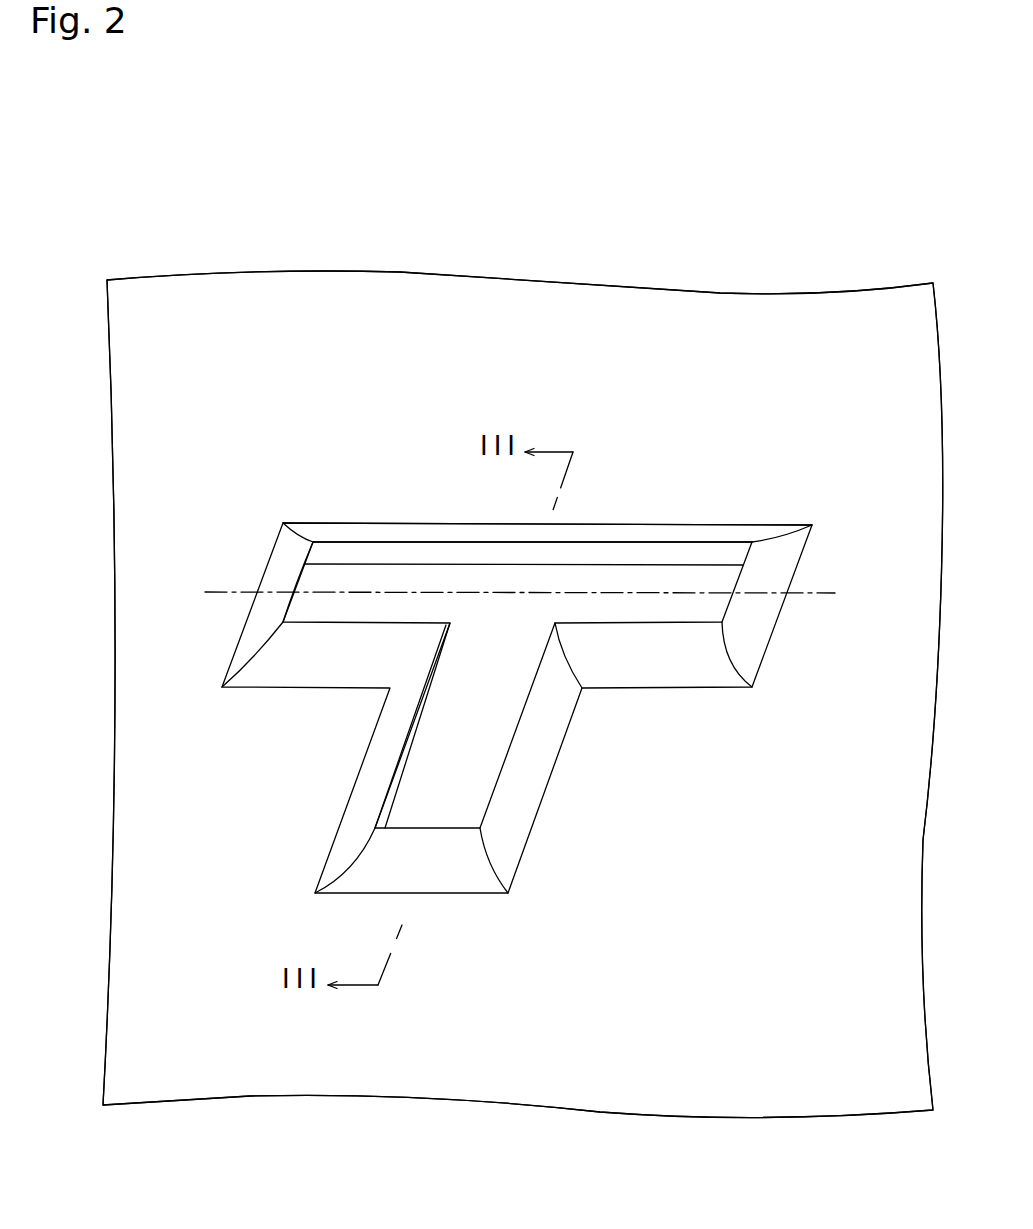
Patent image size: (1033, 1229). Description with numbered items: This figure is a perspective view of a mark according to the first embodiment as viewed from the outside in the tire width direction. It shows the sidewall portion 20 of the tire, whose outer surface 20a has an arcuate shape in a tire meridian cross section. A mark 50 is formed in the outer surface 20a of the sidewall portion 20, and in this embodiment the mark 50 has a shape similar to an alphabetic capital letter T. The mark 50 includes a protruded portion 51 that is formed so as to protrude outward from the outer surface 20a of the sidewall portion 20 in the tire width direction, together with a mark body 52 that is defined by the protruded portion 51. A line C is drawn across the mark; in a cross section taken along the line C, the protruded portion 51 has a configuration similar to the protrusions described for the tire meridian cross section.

The sidewall portion 20 is at (208, 310).
The outer surface 20a is at (348, 393).
The mark 50 is at (278, 478).
The protruded portion 51 is at (373, 528).
The mark body 52 is at (608, 585).
The line C is at (808, 595).